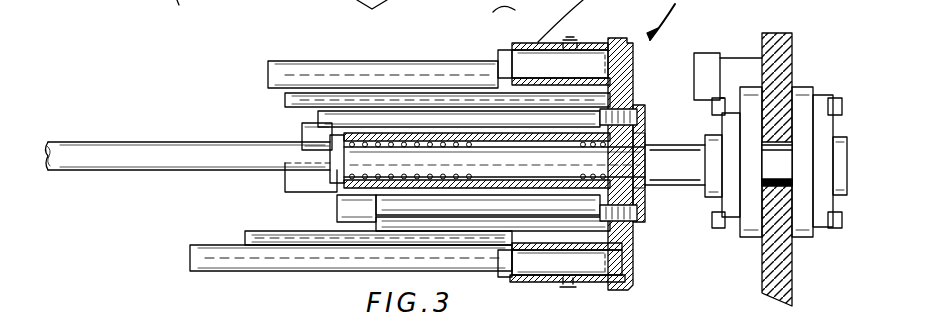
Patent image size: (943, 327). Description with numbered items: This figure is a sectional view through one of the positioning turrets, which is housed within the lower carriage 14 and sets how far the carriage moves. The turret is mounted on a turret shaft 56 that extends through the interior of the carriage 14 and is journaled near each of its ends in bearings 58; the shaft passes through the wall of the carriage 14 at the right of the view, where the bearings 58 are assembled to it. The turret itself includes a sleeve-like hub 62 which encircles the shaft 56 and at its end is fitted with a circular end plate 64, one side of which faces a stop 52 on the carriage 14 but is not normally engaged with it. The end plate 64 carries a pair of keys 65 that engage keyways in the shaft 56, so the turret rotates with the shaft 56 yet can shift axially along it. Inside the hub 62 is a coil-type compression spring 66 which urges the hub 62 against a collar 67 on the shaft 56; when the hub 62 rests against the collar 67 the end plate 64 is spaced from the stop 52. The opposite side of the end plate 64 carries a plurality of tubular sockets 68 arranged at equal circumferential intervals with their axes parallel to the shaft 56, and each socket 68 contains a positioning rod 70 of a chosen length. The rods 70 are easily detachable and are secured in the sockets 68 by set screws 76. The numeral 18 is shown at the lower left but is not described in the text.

The lower carriage 14 is at (793, 290).
The frame 18 is at (73, 314).
The stop 52 is at (722, 63).
The turret shaft 56 is at (172, 163).
The bearings 58 is at (810, 133).
The sleeve-like hub 62 is at (380, 188).
The circular end plate 64 is at (632, 233).
The keys 65 is at (637, 158).
The coil-type compression spring 66 is at (422, 143).
The collar 67 is at (302, 155).
The tubular sockets 68 is at (540, 287).
The positioning rod 70 is at (302, 67).
The set screws 76 is at (570, 42).